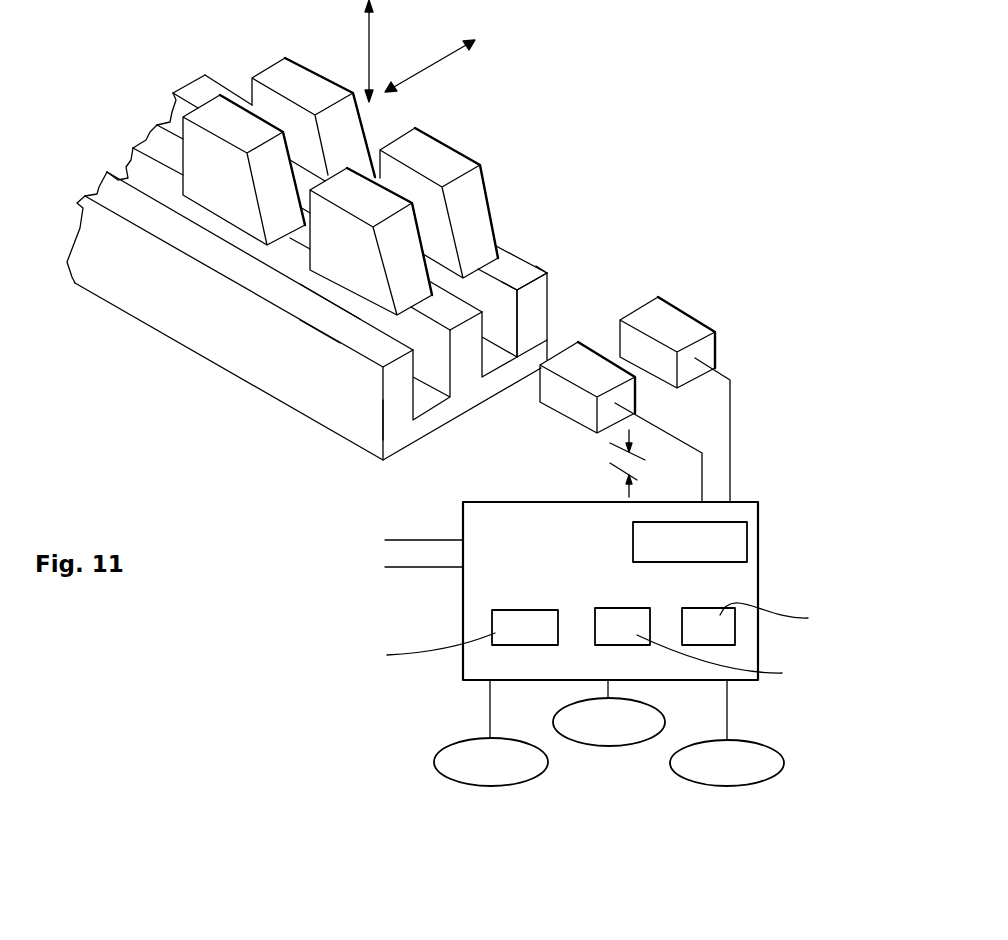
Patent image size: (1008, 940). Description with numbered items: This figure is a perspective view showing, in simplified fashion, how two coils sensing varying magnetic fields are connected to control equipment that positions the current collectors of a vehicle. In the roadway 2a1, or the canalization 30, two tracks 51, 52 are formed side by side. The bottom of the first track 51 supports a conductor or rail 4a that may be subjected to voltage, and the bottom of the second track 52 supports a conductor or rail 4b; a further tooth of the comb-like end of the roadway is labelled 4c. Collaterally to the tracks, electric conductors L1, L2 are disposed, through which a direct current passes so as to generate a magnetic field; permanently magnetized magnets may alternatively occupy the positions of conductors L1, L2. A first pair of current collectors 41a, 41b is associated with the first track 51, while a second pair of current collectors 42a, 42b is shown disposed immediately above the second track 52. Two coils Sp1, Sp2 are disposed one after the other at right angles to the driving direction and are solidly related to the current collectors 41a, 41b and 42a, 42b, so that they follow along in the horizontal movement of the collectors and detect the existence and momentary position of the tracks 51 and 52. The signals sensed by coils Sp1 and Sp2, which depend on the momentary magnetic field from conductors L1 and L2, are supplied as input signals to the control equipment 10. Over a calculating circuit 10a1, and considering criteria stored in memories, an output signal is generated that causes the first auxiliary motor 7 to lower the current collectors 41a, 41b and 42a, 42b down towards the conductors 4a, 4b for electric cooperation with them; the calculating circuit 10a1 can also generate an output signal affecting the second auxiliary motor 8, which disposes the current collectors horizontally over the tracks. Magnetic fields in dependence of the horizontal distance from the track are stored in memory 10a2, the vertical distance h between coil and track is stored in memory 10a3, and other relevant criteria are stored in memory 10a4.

The roadway 2a1 is at (341, 281).
The rail 4a is at (428, 398).
The rail 4b is at (488, 362).
The tooth / slot 4c is at (523, 270).
The current collector 41a is at (238, 188).
The current collector 41b is at (372, 272).
The current collector 42a is at (293, 63).
The current collector 42b is at (430, 150).
The track 51 is at (347, 299).
The track 52 is at (507, 297).
The electric conductor L1 is at (393, 388).
The electric conductor L2 is at (537, 312).
The canalization 30 is at (318, 393).
The coil Sp1 is at (619, 422).
The coil Sp2 is at (678, 397).
The vertical distance h is at (643, 463).
The auxiliary motor 7 is at (414, 271).
The auxiliary motor 8 is at (436, 320).
The control equipment 10 is at (595, 594).
The calculating circuit 10a1 is at (720, 554).
The memory 10a2 is at (520, 775).
The memory 10a3 is at (637, 735).
The memory 10a4 is at (757, 776).